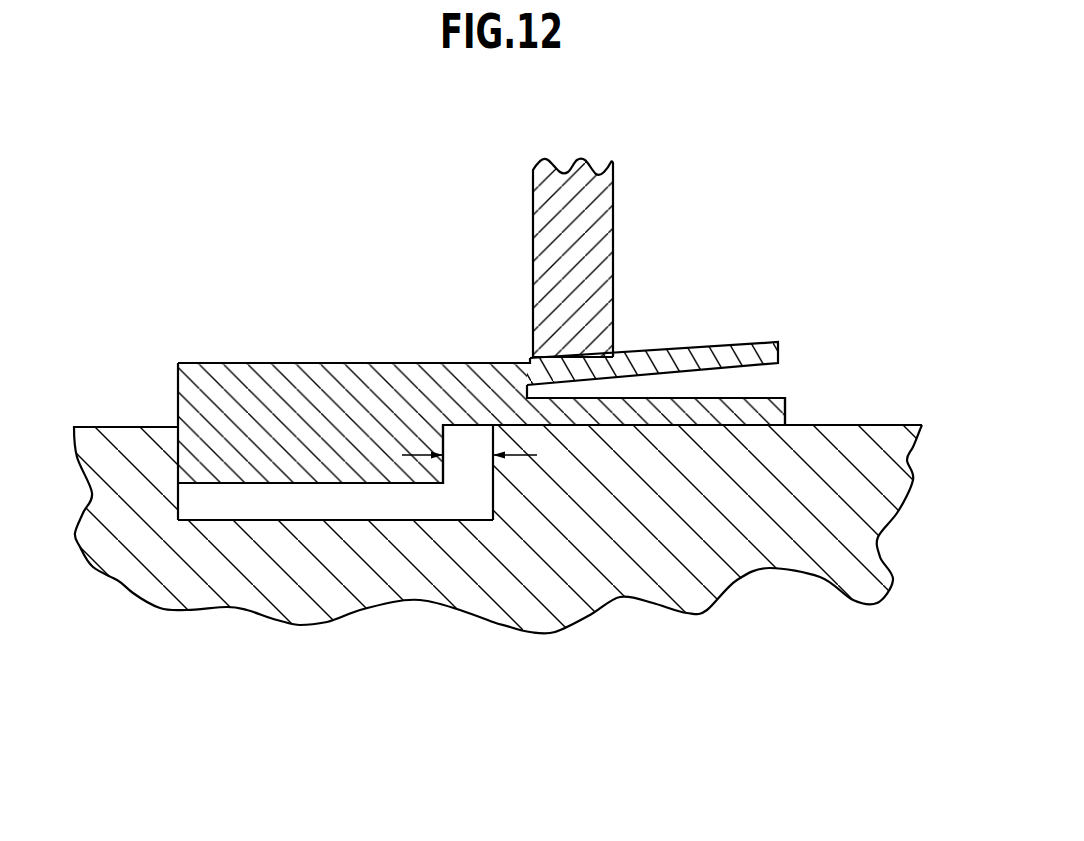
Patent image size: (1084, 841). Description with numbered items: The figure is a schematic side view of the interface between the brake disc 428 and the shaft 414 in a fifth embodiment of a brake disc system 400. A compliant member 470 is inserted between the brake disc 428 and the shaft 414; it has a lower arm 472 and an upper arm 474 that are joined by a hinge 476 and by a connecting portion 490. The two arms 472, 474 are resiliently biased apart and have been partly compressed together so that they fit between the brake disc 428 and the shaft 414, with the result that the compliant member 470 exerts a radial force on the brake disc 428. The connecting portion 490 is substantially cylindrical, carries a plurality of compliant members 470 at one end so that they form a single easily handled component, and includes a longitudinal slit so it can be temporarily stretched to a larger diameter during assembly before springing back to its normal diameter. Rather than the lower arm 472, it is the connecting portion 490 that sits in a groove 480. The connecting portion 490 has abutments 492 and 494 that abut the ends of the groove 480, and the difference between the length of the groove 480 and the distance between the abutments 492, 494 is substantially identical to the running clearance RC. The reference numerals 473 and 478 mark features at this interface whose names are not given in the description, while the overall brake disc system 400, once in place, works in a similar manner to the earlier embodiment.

The brake disc system 400 is at (123, 608).
The shaft 414 is at (842, 475).
The brake disc 428 is at (585, 223).
The compliant member 470 is at (420, 387).
The lower arm 472 is at (767, 407).
The seating surface 473 is at (648, 426).
The upper arm 474 is at (745, 348).
The hinge 476 is at (493, 393).
The contact point 478 is at (568, 355).
The groove 480 is at (308, 519).
The connecting portion 490 is at (257, 383).
The abutment 492 is at (177, 450).
The abutment 494 is at (445, 468).
The running clearance RC is at (477, 456).